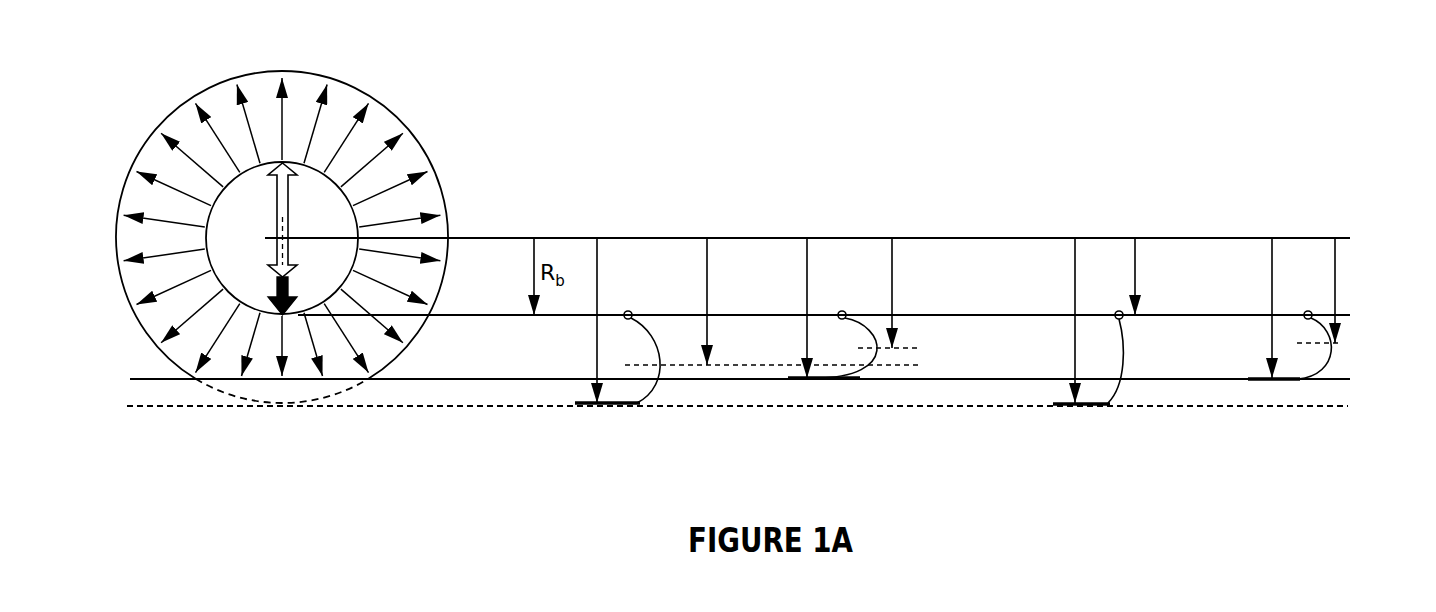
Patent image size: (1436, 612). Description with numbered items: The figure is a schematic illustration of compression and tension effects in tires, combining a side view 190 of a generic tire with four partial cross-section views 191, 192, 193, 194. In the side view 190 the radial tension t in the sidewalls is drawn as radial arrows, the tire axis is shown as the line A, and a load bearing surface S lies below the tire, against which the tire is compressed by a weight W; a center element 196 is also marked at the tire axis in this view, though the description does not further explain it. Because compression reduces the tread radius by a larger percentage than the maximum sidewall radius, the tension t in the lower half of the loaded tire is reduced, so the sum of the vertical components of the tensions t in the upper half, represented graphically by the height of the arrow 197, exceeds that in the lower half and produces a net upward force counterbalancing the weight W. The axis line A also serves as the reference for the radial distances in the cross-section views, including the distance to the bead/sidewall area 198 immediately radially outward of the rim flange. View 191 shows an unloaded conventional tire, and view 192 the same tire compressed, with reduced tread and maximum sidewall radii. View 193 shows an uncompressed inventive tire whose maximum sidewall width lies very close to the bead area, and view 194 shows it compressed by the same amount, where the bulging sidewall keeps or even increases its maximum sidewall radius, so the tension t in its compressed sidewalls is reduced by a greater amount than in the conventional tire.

The side view 190 is at (398, 83).
The view 191 is at (597, 416).
The view 192 is at (836, 425).
The view 193 is at (1098, 426).
The view 194 is at (1294, 421).
The roller center 196 is at (283, 250).
The arrow 197 is at (279, 210).
The bead/sidewall area 198 is at (357, 222).
The tire axis A is at (483, 237).
The load bearing surface S is at (453, 382).
The weight W is at (277, 284).
The radial tension t is at (347, 143).